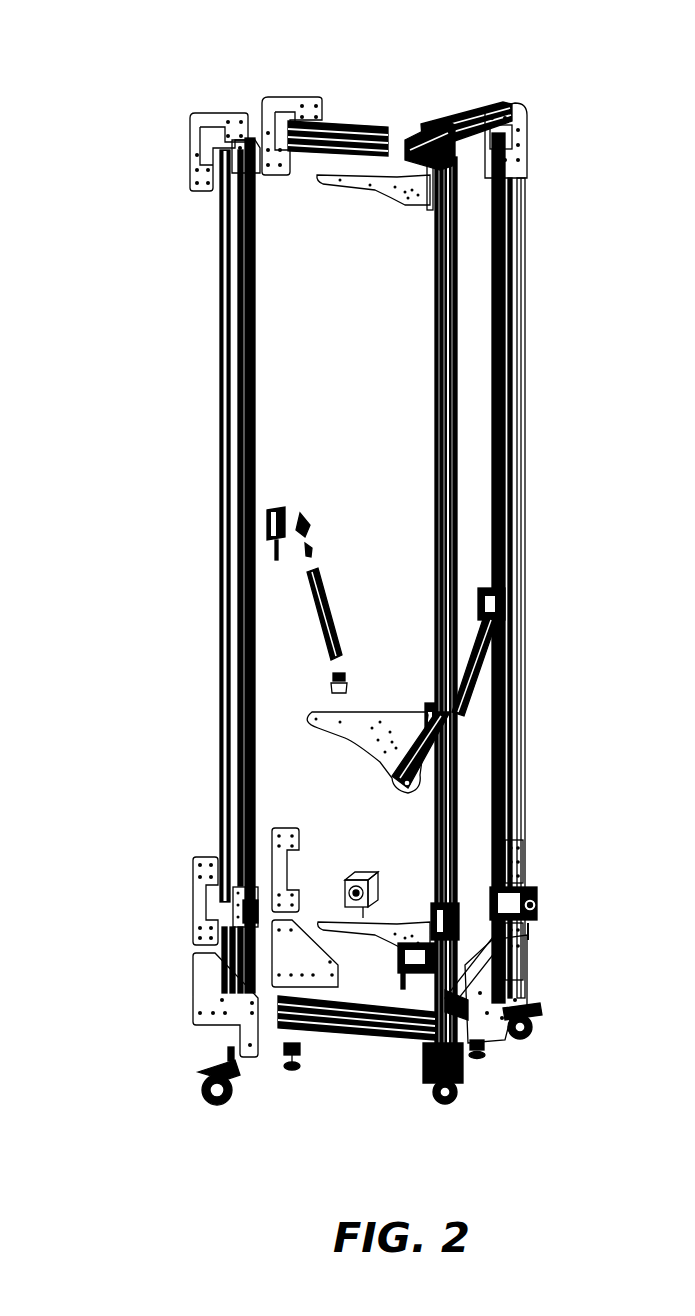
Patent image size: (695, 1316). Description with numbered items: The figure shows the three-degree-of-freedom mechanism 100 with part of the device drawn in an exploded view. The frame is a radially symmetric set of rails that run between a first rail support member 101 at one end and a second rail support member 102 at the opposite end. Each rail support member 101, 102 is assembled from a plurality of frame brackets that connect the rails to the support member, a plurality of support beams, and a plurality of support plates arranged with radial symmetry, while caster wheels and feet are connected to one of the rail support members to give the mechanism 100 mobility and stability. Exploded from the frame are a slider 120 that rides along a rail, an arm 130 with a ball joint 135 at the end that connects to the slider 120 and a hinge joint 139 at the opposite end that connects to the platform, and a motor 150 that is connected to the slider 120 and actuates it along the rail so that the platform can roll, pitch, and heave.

The 3DOF mechanism 100 is at (97, 35).
The first rail support member 101 is at (395, 106).
The second rail support member 102 is at (349, 1056).
The slider 120 is at (290, 507).
The arm 130 is at (337, 613).
The ball joint 135 is at (304, 518).
The hinge joint 139 is at (347, 678).
The motor 150 is at (355, 870).